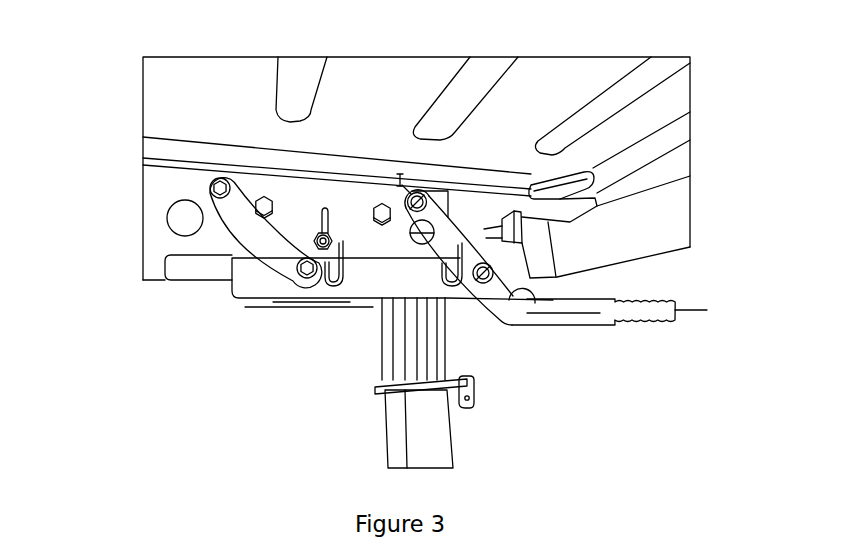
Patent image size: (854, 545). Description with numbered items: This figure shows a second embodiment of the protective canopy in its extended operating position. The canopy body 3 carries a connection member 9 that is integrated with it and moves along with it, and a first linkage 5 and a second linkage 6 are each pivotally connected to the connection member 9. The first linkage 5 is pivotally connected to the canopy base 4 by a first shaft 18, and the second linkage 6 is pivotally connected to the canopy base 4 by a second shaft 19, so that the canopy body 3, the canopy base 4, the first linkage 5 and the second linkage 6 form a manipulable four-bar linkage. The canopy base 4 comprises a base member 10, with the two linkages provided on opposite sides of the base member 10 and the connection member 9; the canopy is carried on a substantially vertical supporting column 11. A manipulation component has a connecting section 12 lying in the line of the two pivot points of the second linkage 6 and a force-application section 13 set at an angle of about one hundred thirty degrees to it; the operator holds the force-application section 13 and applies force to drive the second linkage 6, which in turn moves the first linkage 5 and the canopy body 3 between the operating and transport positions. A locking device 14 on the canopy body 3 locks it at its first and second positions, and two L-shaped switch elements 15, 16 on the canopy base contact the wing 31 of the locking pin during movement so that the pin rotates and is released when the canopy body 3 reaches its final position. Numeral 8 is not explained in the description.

The canopy body 3 is at (165, 102).
The wing 31 is at (323, 208).
The first linkage 5 is at (230, 207).
The connection member 9 is at (153, 210).
The locking device 14 is at (313, 241).
The base member 10 is at (250, 283).
The first shaft 18 is at (245, 280).
The switch element 15 is at (300, 278).
The canopy base 4 is at (372, 298).
The supporting column 11 is at (380, 377).
The switch element 16 is at (428, 283).
The second linkage 6 is at (420, 210).
The connecting section 12 is at (484, 277).
The return spring 8 is at (552, 326).
The force-application section 13 is at (615, 325).
The second shaft 19 is at (480, 268).